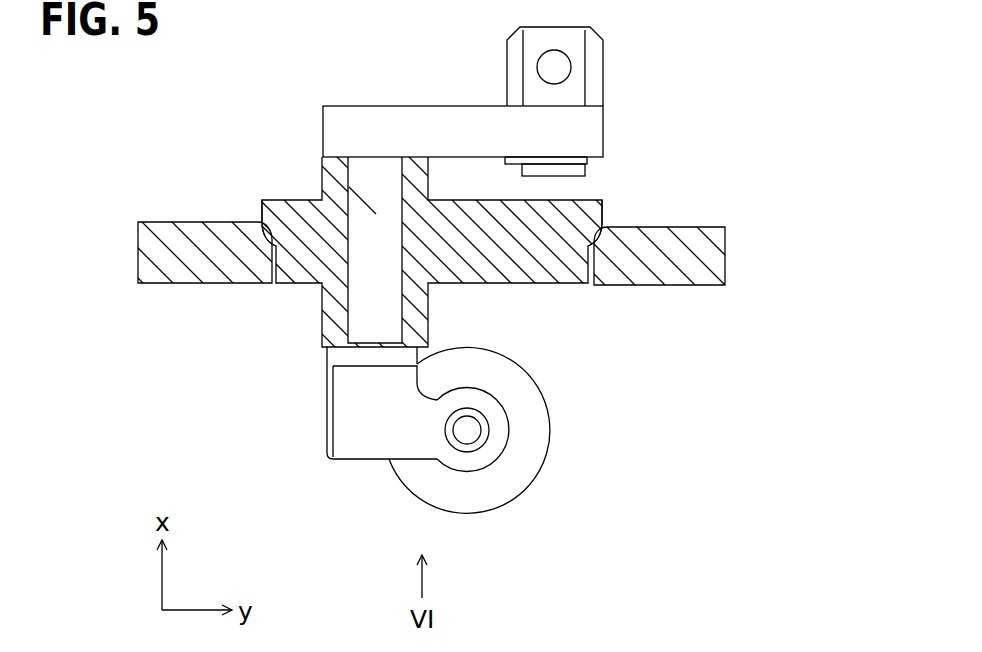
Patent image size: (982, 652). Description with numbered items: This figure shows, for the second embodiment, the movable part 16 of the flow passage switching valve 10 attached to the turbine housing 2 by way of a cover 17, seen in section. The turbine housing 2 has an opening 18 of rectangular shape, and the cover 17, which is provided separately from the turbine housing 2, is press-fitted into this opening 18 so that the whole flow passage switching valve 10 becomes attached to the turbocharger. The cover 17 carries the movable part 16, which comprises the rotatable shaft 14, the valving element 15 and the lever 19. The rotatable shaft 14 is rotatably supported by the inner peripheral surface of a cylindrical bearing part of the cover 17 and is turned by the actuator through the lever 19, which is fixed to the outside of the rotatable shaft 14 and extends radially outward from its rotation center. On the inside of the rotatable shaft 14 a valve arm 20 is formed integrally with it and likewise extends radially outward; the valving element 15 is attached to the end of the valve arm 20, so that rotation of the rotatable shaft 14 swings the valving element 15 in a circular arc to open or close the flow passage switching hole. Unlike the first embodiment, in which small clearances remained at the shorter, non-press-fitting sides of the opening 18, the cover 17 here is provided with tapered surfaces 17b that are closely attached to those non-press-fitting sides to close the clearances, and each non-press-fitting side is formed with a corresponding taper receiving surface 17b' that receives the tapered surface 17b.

The turbine housing 2 is at (185, 246).
The flow passage switching valve 10 is at (465, 451).
The rotatable shaft 14 is at (321, 157).
The valving element 15 is at (538, 410).
The movable part 16 is at (357, 478).
The cover 17 is at (491, 270).
The tapered surface 17b is at (437, 204).
The taper receiving surface 17b' is at (450, 174).
The opening 18 is at (430, 263).
The lever 19 is at (476, 116).
The valve arm 20 is at (417, 445).